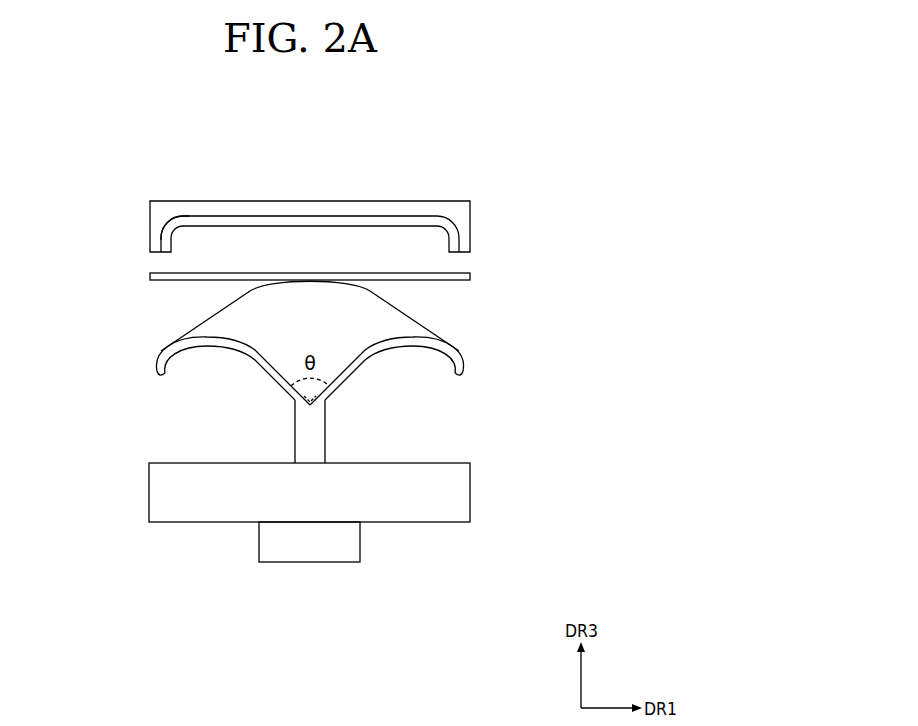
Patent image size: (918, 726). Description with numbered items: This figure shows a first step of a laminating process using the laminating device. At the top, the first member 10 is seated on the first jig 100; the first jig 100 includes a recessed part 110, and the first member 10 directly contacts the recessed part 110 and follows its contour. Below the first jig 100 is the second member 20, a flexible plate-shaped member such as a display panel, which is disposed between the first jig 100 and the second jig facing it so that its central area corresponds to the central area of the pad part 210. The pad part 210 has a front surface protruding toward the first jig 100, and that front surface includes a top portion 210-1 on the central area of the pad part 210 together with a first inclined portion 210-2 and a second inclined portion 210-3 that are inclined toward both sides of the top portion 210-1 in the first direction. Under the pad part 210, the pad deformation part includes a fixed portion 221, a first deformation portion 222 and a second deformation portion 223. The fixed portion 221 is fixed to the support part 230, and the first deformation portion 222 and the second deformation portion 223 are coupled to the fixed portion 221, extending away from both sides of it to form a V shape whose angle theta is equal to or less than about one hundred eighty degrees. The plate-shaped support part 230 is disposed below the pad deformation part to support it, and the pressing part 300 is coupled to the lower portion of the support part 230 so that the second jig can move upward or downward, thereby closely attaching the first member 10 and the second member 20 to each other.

The first jig 100 is at (455, 210).
The first member 10 is at (453, 245).
The recessed part 110 is at (166, 217).
The second member 20 is at (458, 276).
The pad part 210 is at (309, 236).
The top portion 210-1 is at (308, 271).
The first inclined portion 210-2 is at (216, 307).
The second inclined portion 210-3 is at (404, 307).
The fixed portion 221 is at (310, 437).
The first deformation portion 222 is at (170, 347).
The second deformation portion 223 is at (440, 350).
The support part 230 is at (453, 502).
The pressing part 300 is at (350, 545).